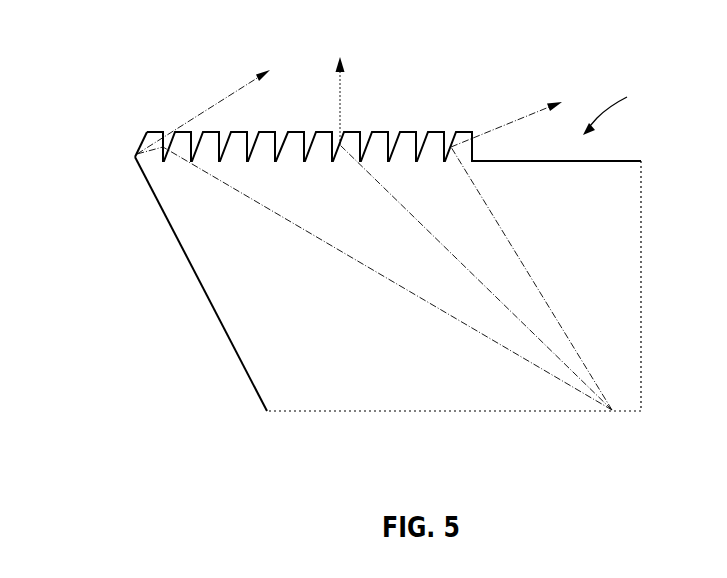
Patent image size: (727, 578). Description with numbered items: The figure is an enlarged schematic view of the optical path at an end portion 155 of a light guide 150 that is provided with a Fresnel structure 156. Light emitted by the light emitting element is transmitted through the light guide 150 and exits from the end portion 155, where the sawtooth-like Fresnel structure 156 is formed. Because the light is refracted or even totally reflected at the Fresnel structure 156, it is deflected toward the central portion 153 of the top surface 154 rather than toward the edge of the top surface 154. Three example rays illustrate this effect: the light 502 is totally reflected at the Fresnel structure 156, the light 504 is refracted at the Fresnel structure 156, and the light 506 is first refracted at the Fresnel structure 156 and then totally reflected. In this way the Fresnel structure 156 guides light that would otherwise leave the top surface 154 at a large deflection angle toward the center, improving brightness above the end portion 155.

The light guide 150 is at (237, 358).
The central portion 153 is at (597, 161).
The top surface 154 is at (625, 111).
The end portion 155 is at (202, 183).
The Fresnel structure 156 is at (152, 158).
The light 502 is at (533, 112).
The light 504 is at (338, 102).
The light 506 is at (233, 93).